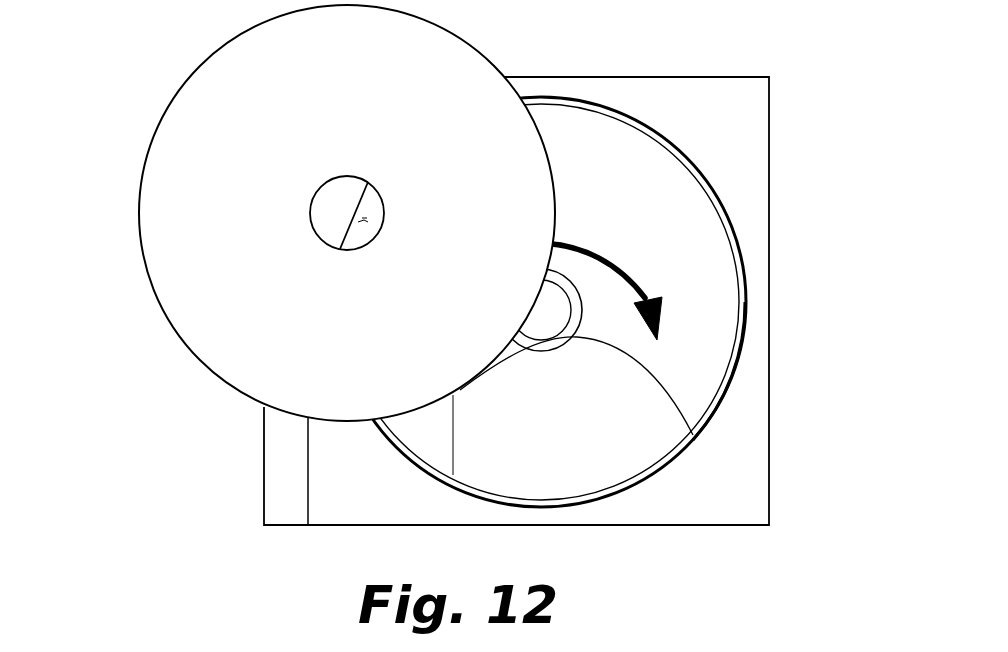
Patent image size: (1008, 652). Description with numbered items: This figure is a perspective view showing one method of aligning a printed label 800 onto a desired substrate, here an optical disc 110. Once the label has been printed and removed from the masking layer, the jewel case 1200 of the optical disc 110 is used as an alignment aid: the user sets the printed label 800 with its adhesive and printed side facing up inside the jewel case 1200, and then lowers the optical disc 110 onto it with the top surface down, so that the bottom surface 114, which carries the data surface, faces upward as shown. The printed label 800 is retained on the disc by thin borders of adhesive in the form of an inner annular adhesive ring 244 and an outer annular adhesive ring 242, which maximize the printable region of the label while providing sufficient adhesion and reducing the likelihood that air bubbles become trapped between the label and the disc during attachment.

The optical disc 110 is at (306, 241).
The bottom surface 114 is at (147, 277).
The jewel case 1200 is at (642, 98).
The printed label 800 is at (652, 211).
The outer annular adhesive ring 242 is at (720, 400).
The inner annular adhesive ring 244 is at (693, 435).